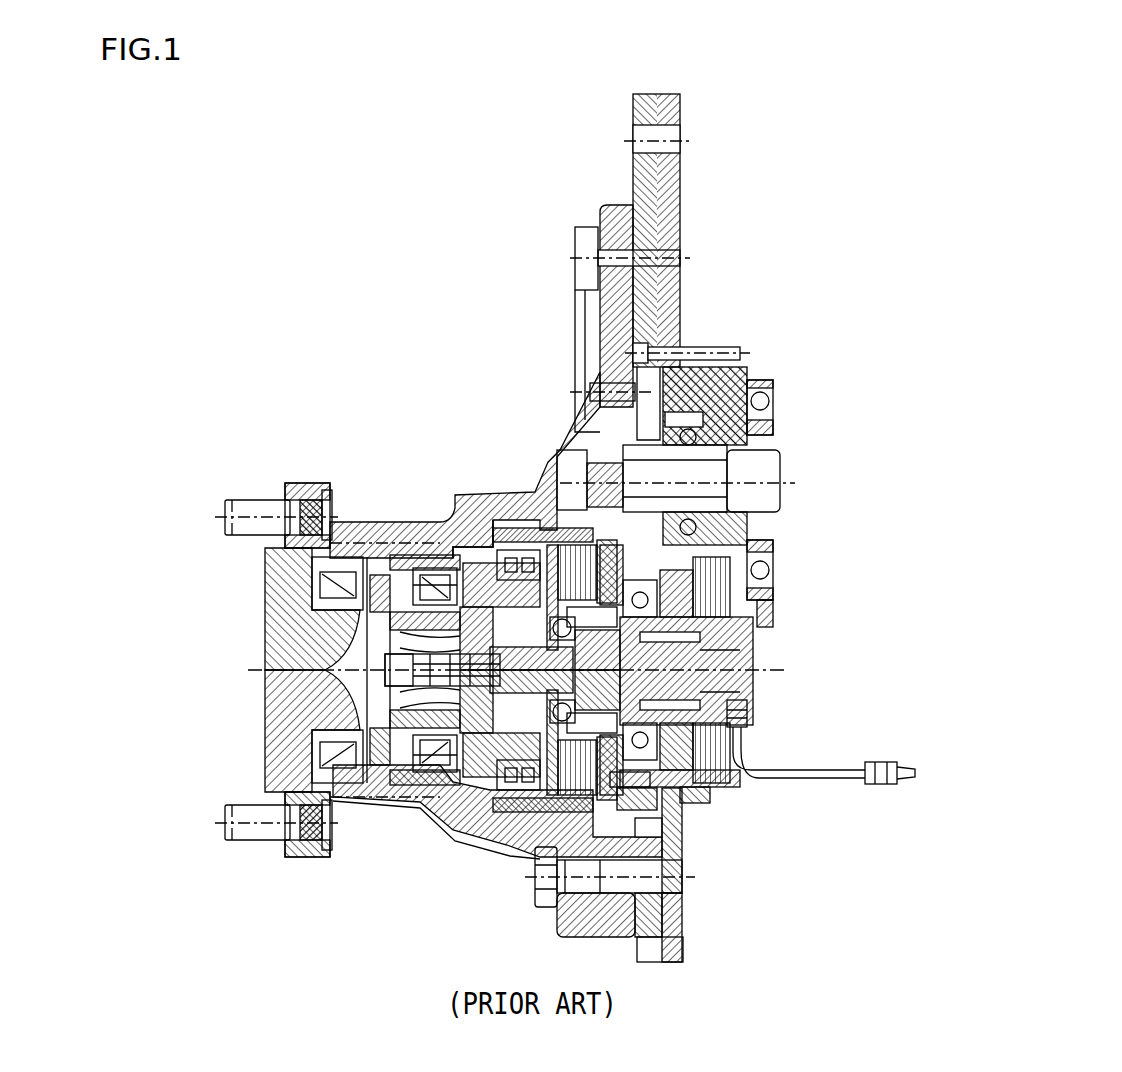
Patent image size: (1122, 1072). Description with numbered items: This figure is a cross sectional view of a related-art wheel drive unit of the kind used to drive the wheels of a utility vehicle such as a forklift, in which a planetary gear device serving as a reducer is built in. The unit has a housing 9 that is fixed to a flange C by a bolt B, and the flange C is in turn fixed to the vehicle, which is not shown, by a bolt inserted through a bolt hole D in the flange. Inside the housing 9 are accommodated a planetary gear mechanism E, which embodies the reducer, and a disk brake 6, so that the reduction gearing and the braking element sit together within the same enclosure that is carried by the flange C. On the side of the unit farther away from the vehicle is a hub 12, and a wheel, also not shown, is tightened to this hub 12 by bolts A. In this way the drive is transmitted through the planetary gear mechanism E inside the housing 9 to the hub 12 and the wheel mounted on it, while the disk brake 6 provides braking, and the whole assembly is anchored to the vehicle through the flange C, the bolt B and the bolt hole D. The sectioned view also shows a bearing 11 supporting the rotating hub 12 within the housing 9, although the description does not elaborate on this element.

The bolts A is at (243, 527).
The bolt B is at (543, 883).
The flange C is at (648, 170).
The bolt hole D is at (645, 132).
The planetary gear mechanism E is at (470, 548).
The disk brake 6 is at (600, 533).
The housing 9 is at (460, 833).
The bearing 11 is at (453, 577).
The hub 12 is at (293, 767).